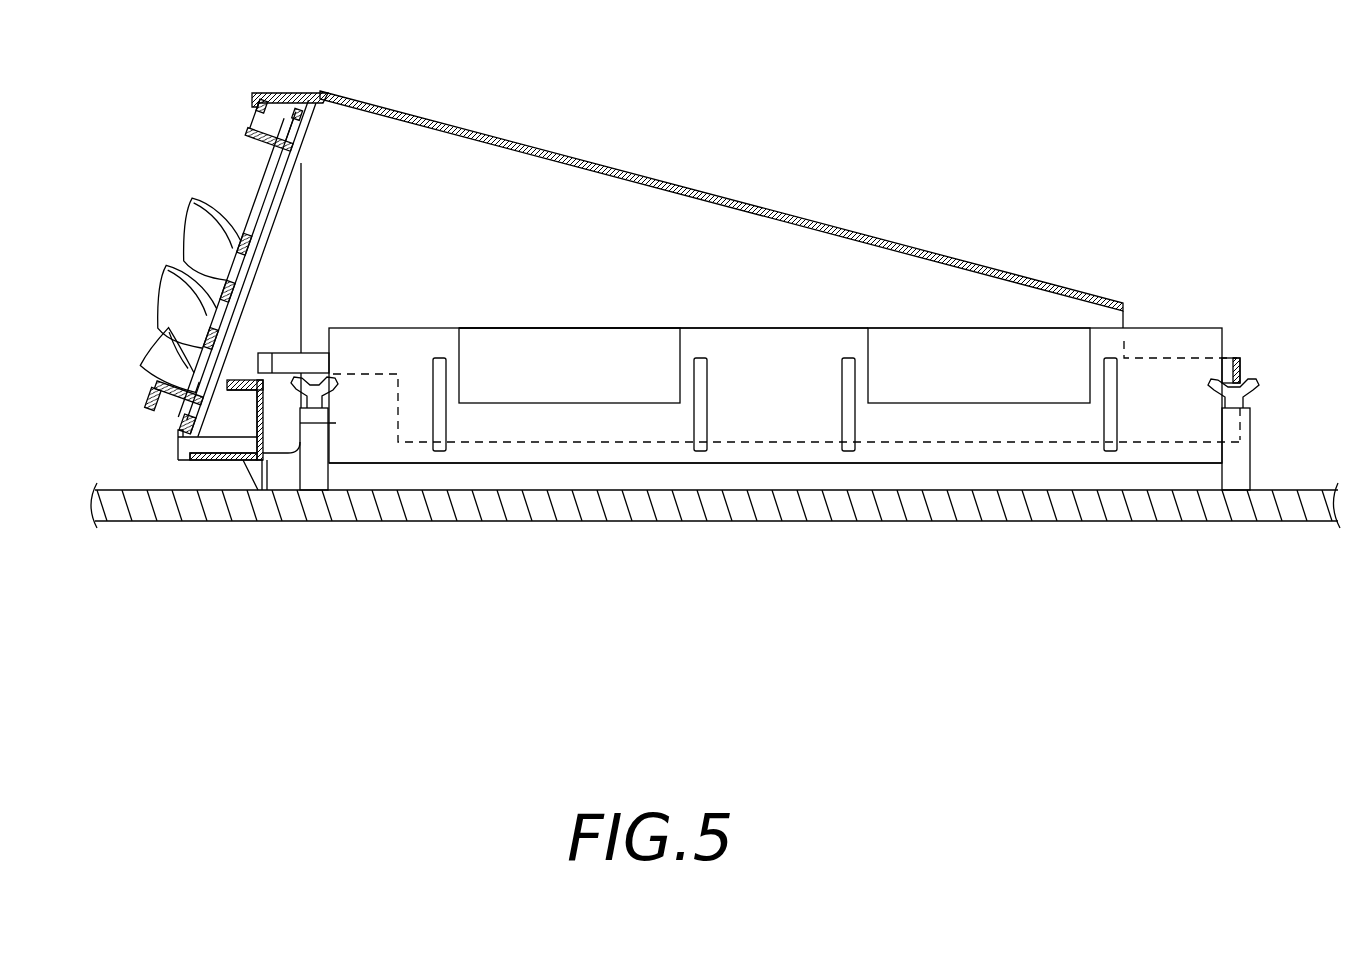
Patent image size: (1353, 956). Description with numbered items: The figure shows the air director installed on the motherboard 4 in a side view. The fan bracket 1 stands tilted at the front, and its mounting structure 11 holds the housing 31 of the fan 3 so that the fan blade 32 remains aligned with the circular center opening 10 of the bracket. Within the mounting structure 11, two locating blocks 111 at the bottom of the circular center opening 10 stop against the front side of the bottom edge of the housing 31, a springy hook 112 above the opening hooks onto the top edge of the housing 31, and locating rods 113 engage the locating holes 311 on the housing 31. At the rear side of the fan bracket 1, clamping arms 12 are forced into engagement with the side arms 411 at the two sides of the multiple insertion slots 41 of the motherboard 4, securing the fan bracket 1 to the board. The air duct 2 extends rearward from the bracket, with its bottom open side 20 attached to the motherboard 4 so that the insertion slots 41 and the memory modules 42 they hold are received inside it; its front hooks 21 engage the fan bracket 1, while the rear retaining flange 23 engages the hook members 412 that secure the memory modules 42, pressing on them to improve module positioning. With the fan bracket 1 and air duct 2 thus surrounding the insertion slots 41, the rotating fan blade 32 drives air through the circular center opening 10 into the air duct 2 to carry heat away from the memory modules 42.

The fan bracket 1 is at (311, 183).
The circular center opening 10 is at (285, 222).
The mounting structure 11 is at (227, 472).
The locating blocks 111 is at (178, 440).
The springy hook 112 is at (283, 92).
The locating rods 113 is at (288, 132).
The clamping arms 12 is at (333, 443).
The air duct 2 is at (599, 166).
The bottom open side 20 is at (692, 262).
The front hooks 21 is at (282, 352).
The rear retaining flange 23 is at (1240, 372).
The fan 3 is at (146, 293).
The housing 31 is at (258, 106).
The locating holes 311 is at (158, 395).
The fan blade 32 is at (197, 222).
The motherboard 4 is at (582, 512).
The insertion slots 41 is at (732, 475).
The side arms 411 is at (1243, 455).
The hook members 412 is at (1258, 385).
The memory modules 42 is at (780, 346).